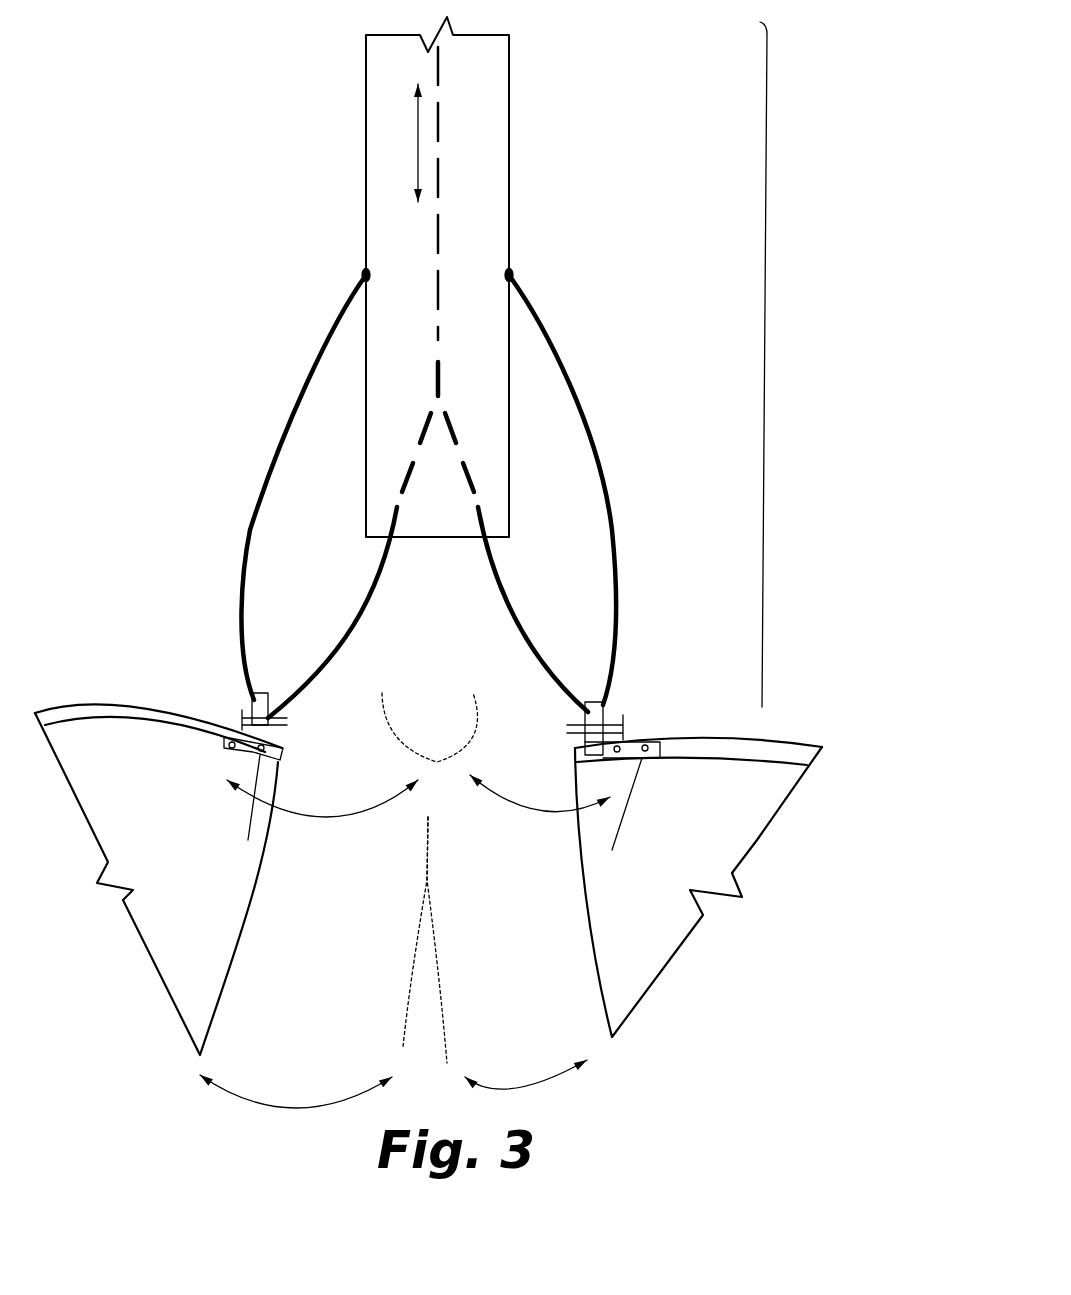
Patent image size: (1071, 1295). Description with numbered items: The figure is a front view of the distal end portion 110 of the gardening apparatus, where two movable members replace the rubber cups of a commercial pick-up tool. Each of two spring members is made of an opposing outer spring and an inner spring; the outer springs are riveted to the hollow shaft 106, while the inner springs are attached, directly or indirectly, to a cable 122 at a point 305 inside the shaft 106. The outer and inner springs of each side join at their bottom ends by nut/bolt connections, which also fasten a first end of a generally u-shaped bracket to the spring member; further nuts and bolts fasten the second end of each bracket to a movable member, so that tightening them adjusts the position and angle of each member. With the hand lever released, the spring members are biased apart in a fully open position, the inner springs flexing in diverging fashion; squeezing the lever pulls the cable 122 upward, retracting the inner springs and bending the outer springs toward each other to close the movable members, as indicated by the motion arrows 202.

The shaft 106 is at (509, 103).
The distal end portion 110 is at (762, 368).
The cable 122 is at (437, 210).
The gripping motion (arrows) 202 is at (437, 763).
The point 305 is at (438, 363).